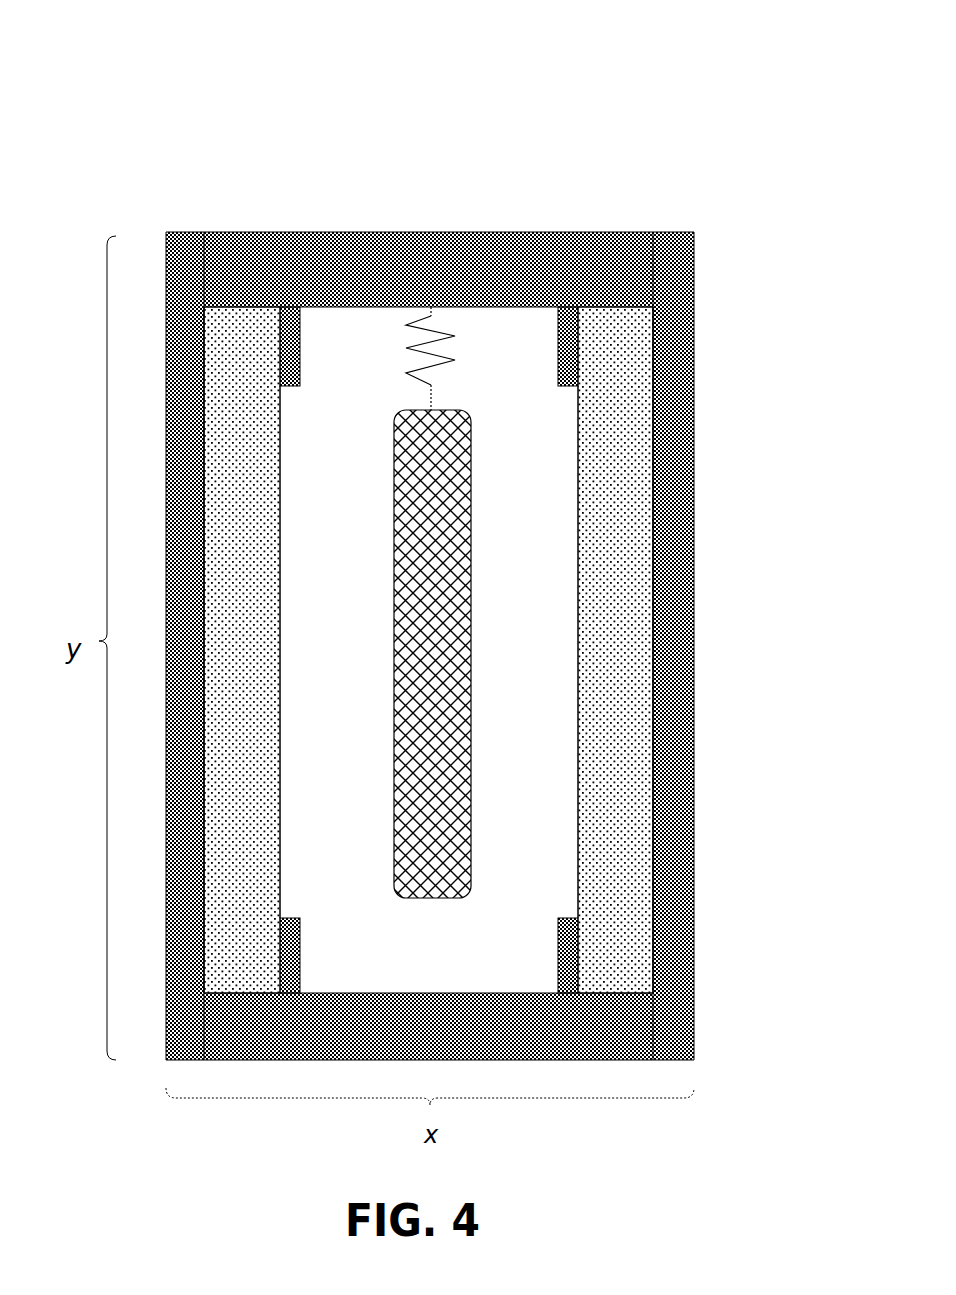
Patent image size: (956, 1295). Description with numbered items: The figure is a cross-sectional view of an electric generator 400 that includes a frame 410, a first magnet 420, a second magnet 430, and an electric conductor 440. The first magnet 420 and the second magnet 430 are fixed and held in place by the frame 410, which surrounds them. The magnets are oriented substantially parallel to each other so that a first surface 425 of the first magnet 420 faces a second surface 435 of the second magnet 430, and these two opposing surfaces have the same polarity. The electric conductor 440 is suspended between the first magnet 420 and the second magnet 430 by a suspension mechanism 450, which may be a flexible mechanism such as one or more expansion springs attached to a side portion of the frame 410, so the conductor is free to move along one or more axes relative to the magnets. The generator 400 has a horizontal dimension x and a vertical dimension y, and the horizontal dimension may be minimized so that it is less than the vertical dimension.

The electric generator 400 is at (449, 544).
The frame 410 is at (666, 247).
The first magnet 420 is at (226, 330).
The first surface 425 is at (270, 563).
The second magnet 430 is at (598, 402).
The second surface 435 is at (572, 641).
The electric conductor 440 is at (433, 857).
The suspension mechanism 450 is at (413, 307).